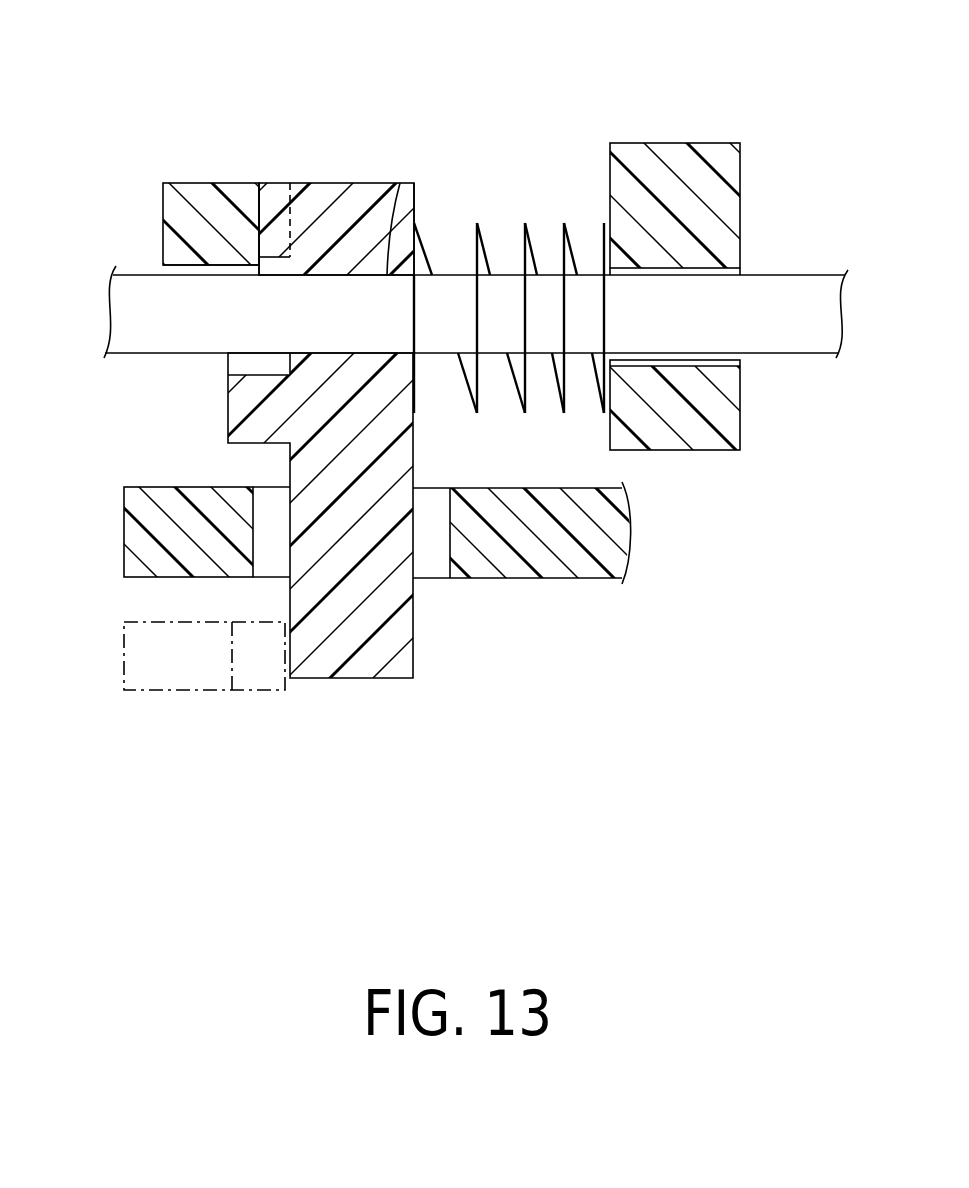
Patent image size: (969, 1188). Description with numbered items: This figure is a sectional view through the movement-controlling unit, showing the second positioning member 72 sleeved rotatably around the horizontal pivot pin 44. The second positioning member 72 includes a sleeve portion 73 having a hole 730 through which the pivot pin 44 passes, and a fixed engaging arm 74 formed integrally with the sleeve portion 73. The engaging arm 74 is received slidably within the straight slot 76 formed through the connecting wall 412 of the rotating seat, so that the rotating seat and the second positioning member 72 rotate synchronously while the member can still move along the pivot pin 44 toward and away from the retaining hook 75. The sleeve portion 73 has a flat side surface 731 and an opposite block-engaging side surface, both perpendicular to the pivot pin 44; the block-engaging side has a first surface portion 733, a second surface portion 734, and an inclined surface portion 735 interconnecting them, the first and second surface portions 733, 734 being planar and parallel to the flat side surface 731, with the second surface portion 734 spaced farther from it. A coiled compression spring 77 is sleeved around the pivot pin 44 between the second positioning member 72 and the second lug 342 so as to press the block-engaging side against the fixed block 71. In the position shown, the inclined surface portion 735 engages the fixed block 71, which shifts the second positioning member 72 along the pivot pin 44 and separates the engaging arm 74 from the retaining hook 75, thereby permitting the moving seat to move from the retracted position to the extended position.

The horizontal pivot pin 44 is at (812, 275).
The fixed block 71 is at (163, 237).
The second positioning member 72 is at (334, 172).
The sleeve portion 73 is at (377, 185).
The hole 730 is at (400, 183).
The flat side surface 731 is at (414, 217).
The first surface portion 733 is at (282, 215).
The second surface portion 734 is at (228, 410).
The inclined surface portion 735 is at (260, 230).
The fixed engaging arm 74 is at (385, 647).
The retaining hook 75 is at (198, 690).
The straight slot 76 is at (427, 565).
The coiled compression spring 77 is at (572, 255).
The second lug 342 is at (718, 143).
The connecting wall 412 is at (595, 570).